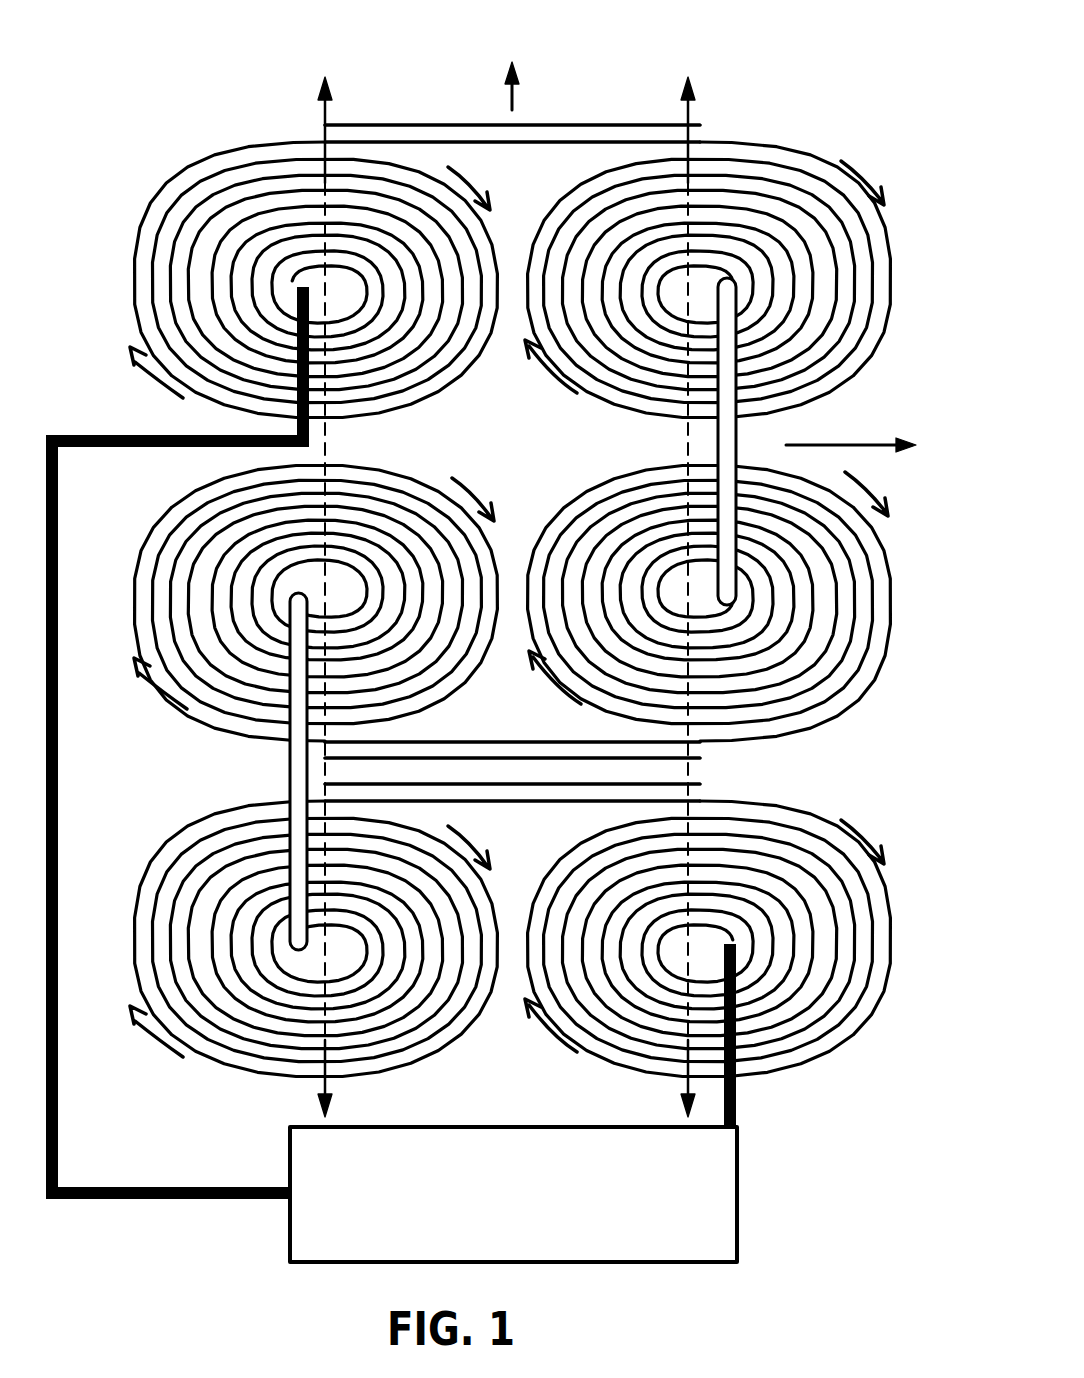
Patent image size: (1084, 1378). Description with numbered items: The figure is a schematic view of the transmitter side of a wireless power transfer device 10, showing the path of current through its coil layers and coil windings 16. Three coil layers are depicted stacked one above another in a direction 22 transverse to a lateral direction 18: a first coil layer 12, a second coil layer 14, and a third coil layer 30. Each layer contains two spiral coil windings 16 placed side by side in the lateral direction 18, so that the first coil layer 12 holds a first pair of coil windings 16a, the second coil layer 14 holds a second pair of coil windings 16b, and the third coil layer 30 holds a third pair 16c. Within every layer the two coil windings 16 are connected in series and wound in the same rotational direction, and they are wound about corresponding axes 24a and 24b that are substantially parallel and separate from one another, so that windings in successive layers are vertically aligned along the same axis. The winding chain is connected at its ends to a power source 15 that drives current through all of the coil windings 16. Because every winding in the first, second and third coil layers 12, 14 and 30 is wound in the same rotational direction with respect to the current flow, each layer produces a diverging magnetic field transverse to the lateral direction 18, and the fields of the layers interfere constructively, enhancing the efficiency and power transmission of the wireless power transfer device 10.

The wireless power transfer device 10 is at (503, 632).
The first coil layer 12 is at (642, 955).
The second coil layer 14 is at (643, 647).
The power source 15 is at (738, 1165).
The coil winding 16 is at (185, 252).
The first pair of coil windings 16a is at (595, 1062).
The second pair of coil windings 16b is at (590, 650).
The third pair of coil windings 16c is at (605, 398).
The lateral direction 18 is at (870, 446).
The stacking direction 22 is at (506, 98).
The first winding axis 24a is at (320, 118).
The second winding axis 24b is at (683, 118).
The third coil layer 30 is at (637, 294).